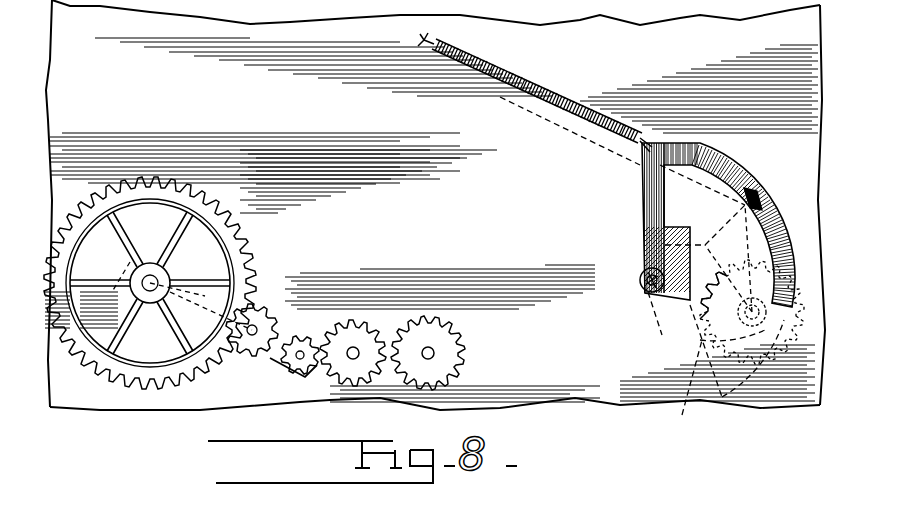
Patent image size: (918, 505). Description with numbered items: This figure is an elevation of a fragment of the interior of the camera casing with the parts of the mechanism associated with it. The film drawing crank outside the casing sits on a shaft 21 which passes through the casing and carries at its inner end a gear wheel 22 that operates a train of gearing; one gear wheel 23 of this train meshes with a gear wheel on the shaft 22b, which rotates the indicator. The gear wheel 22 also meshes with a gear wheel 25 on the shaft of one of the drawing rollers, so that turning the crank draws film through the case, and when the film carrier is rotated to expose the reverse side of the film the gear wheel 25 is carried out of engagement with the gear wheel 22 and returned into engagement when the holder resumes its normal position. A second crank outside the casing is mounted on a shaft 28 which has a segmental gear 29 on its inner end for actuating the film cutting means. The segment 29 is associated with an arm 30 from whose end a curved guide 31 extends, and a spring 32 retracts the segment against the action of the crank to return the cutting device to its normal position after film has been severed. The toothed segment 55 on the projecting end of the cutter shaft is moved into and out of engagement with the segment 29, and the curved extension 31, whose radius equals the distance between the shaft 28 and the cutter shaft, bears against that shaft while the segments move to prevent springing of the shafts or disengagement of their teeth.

The shaft 21 is at (355, 349).
The gear wheel 22 is at (345, 331).
The shaft 22b is at (150, 283).
The gear wheel 23 is at (282, 345).
The gear wheel 25 is at (458, 361).
The shaft 28 is at (646, 289).
The segmental gear 29 is at (700, 330).
The arm 30 is at (648, 190).
The curved guide 31 is at (790, 310).
The spring 32 is at (541, 90).
The toothed segment 55 is at (683, 392).